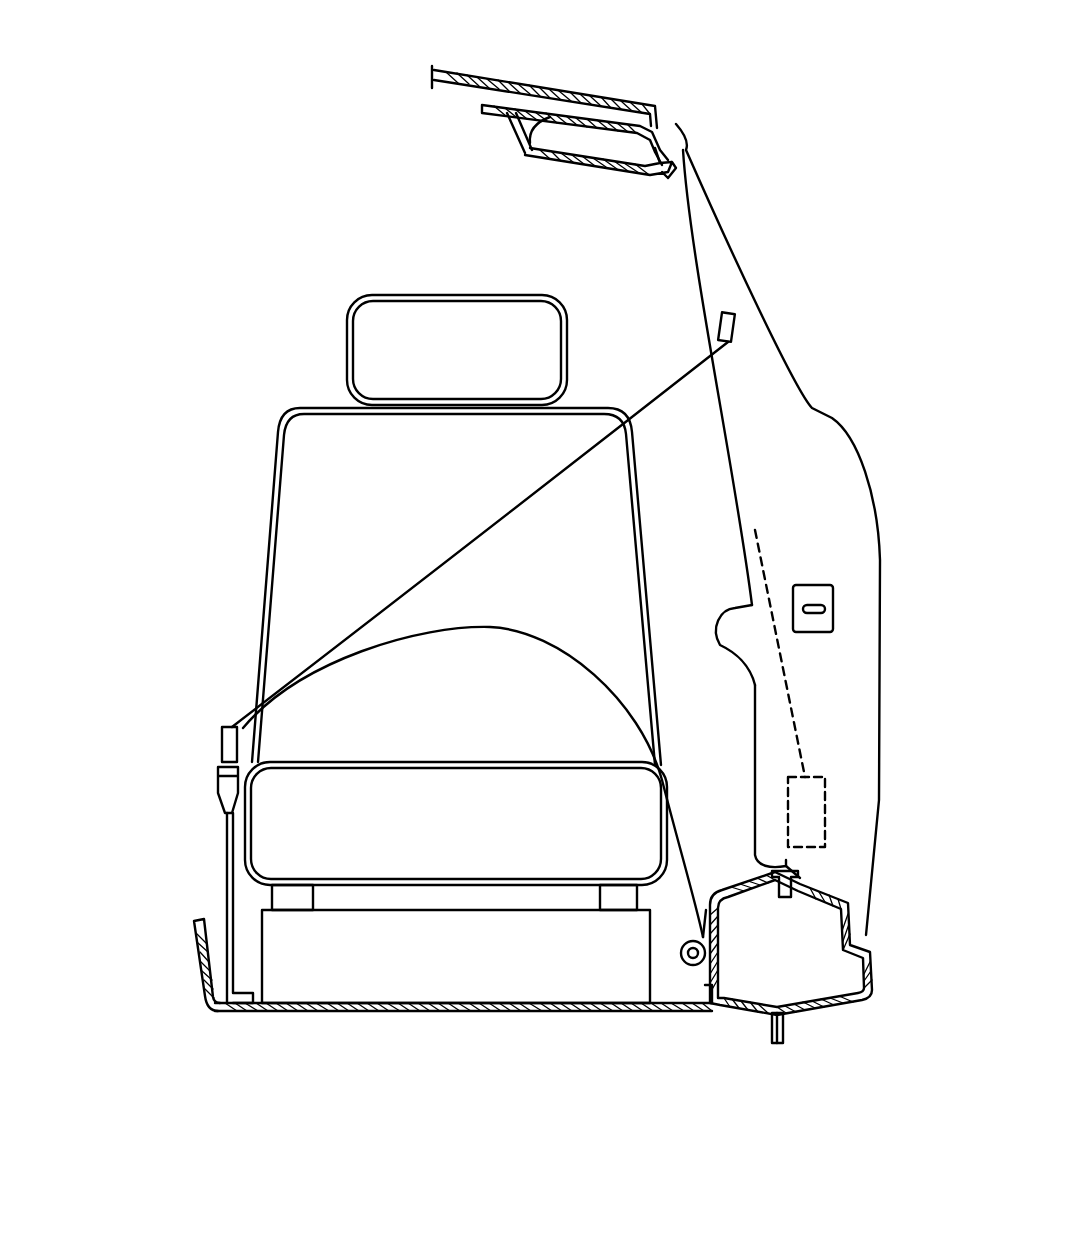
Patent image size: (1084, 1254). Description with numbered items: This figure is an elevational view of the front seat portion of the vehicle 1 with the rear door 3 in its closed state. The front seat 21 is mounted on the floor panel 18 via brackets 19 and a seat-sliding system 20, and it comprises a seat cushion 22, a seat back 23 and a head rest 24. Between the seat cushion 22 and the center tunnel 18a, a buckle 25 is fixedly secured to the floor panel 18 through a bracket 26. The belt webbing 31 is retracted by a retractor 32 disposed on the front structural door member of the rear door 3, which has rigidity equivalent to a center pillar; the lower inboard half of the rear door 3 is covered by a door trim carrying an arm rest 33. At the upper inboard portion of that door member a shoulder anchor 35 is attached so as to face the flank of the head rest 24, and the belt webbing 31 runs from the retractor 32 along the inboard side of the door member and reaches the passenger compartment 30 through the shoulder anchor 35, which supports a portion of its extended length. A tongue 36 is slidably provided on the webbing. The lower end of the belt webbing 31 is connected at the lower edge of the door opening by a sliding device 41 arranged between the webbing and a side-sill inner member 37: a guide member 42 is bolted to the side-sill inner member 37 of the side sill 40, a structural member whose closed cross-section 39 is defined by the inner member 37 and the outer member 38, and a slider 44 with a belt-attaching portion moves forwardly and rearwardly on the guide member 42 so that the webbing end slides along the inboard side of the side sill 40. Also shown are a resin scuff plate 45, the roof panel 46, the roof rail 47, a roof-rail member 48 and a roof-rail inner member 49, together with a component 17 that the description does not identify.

The vehicle 1 is at (850, 265).
The rear door 3 is at (880, 538).
The switch 17 is at (812, 585).
The floor panel 18 is at (403, 1014).
The center tunnel 18a is at (196, 945).
The bracket 19 is at (486, 983).
The seat-sliding system 20 is at (312, 893).
The front seat 21 is at (254, 479).
The seat cushion 22 is at (481, 790).
The seat back 23 is at (285, 565).
The head rest 24 is at (365, 345).
The buckle 25 is at (215, 787).
The bracket 26 is at (225, 885).
The passenger compartment 30 is at (384, 236).
The belt webbing 31 is at (456, 518).
The retractor 32 is at (825, 820).
The arm rest 33 is at (717, 658).
The shoulder anchor 35 is at (720, 325).
The tongue 36 is at (220, 750).
The side-sill inner member 37 is at (722, 1013).
The side-sill outer member 38 is at (862, 1003).
The closed cross-section 39 is at (755, 968).
The side sill 40 is at (878, 959).
The sliding device 41 is at (707, 905).
The guide member 42 is at (697, 965).
The slider 44 is at (681, 958).
The scuff plate 45 is at (800, 869).
The roof panel 46 is at (500, 73).
The roof rail 47 is at (629, 106).
The roof-rail member 48 is at (528, 156).
The roof-rail inner member 49 is at (595, 176).